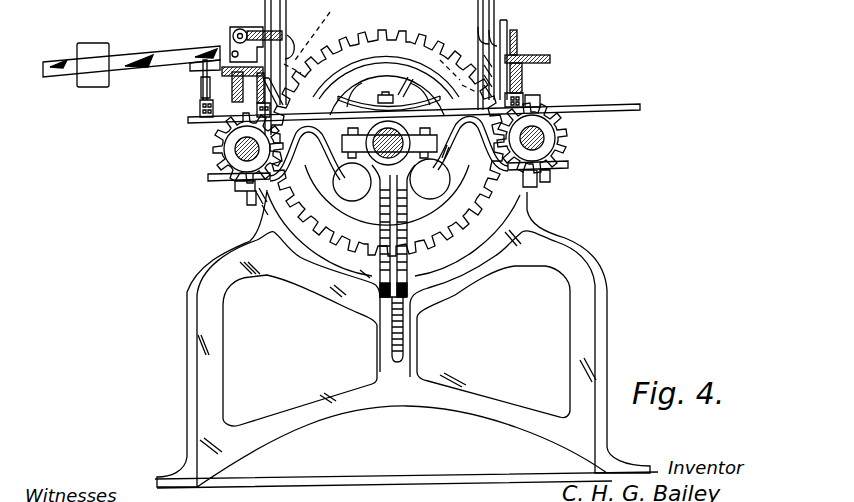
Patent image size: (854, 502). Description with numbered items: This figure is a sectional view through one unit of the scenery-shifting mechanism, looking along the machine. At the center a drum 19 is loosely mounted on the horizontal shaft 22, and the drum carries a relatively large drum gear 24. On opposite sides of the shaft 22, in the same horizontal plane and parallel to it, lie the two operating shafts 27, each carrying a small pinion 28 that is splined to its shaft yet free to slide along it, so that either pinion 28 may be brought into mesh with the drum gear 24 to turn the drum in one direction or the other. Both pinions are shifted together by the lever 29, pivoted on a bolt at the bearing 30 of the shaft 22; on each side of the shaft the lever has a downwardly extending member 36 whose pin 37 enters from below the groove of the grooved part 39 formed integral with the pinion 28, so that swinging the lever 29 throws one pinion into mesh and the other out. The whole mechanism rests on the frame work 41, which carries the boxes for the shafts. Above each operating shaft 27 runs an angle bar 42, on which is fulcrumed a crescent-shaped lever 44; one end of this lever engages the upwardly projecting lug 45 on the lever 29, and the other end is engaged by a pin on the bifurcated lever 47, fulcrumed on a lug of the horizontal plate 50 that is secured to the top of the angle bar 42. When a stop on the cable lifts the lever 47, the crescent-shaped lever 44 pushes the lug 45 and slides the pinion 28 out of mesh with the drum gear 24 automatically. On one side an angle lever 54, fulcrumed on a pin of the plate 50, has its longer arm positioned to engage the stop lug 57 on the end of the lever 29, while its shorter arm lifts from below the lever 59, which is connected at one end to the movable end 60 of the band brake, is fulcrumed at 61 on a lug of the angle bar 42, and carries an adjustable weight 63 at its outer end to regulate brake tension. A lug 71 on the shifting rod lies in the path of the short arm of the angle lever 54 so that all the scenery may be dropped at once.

The drum 19 is at (453, 145).
The horizontal shaft 22 is at (391, 180).
The drum gear 24 is at (397, 38).
The operating shaft 27 is at (225, 153).
The pinion 28 is at (227, 147).
The lever 29 is at (638, 107).
The bearing 30 is at (400, 152).
The downwardly extending member 36 is at (222, 185).
The pin 37 is at (386, 94).
The grooved part 39 is at (215, 152).
The frame work 41 is at (406, 338).
The angle bar 42 is at (522, 93).
The crescent-shaped lever 44 is at (490, 37).
The lug 45 is at (207, 138).
The lever 47 is at (262, 28).
The horizontal plate 50 is at (527, 53).
The angle lever 54 is at (200, 73).
The stop lug 57 is at (213, 100).
The lever 59 is at (205, 66).
The movable end 60 is at (238, 30).
The fulcrum 61 is at (228, 48).
The adjustable weight 63 is at (88, 87).
The lug 71 is at (200, 83).